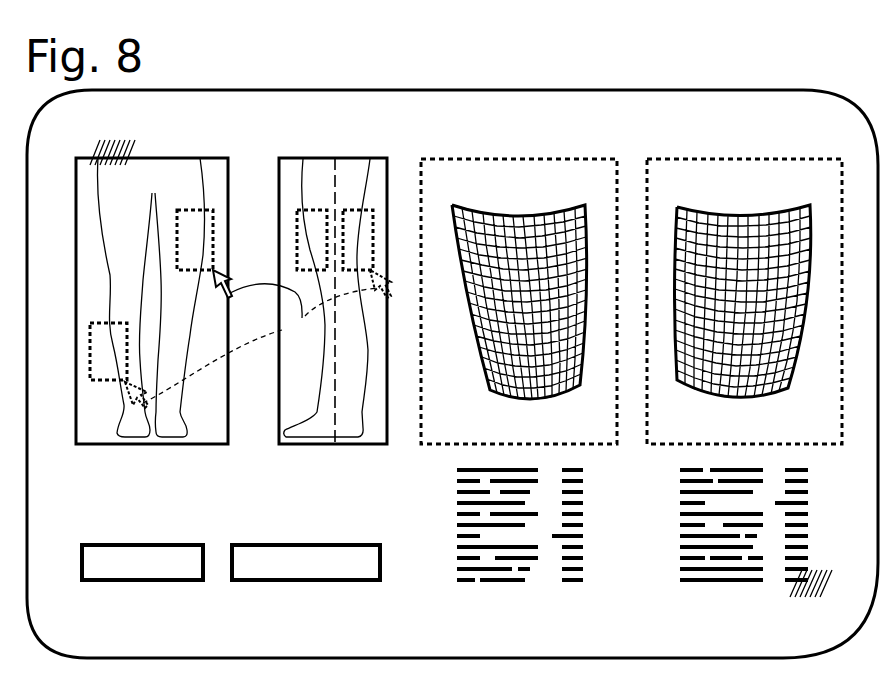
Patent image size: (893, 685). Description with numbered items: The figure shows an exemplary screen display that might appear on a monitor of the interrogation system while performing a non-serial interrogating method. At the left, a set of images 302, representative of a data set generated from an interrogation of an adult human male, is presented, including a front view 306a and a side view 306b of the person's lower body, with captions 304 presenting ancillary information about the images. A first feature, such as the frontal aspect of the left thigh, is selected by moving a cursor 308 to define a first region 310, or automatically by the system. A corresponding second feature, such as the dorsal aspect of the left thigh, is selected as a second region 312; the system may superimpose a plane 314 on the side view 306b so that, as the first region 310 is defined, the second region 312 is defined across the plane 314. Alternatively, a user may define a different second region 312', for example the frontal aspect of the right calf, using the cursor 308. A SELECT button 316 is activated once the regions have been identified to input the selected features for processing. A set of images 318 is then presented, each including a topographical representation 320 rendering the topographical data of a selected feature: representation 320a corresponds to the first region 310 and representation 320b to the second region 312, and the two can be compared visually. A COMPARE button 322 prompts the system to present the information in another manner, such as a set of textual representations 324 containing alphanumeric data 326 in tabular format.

The set of images 302 is at (308, 143).
The captions 304 is at (360, 515).
The front view 306a is at (115, 405).
The side view 306b is at (372, 412).
The cursor 308 is at (258, 339).
The first region 310 is at (297, 206).
The second region 312 is at (390, 191).
The second region 312' is at (77, 348).
The plane 314 is at (338, 184).
The SELECT button 316 is at (143, 582).
The set of images 318 is at (687, 147).
The topographical representation 320 is at (627, 305).
The topographical representation 320a is at (538, 392).
The topographical representation 320b is at (785, 390).
The COMPARE button 322 is at (318, 582).
The set of textual representations 324 is at (690, 588).
The alphanumeric data 326 is at (632, 549).